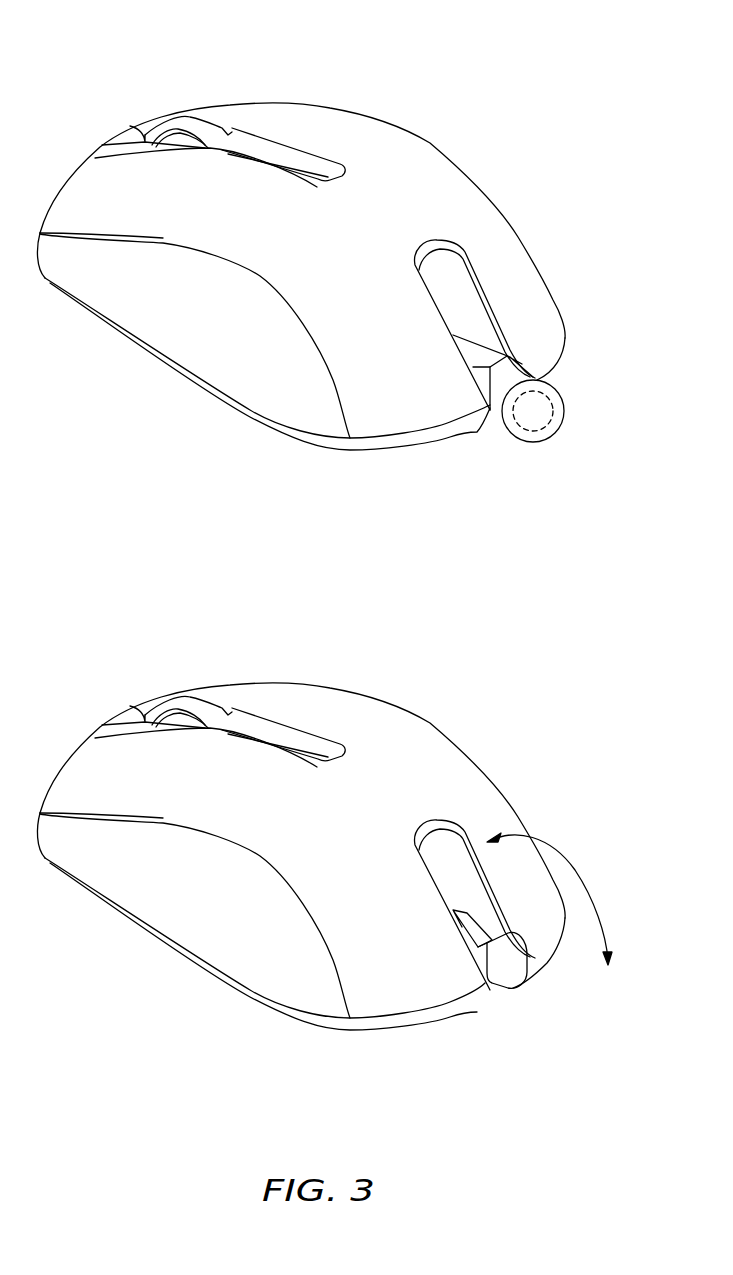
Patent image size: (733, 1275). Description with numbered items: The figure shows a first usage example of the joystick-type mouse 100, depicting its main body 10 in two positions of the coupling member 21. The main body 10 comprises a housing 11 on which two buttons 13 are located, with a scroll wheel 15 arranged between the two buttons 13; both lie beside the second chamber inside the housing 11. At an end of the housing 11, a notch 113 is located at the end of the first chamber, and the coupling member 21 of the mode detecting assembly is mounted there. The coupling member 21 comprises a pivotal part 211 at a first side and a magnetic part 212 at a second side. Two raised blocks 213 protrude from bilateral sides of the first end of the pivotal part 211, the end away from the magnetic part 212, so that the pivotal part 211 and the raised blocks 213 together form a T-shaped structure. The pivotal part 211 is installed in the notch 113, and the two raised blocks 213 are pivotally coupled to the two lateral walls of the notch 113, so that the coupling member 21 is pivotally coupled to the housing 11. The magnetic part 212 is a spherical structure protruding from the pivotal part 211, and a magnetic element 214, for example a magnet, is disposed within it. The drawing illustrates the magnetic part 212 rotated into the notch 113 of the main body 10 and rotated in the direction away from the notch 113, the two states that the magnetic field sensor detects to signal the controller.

The mouse 100 is at (62, 37).
The main body 10 is at (400, 110).
The housing 11 is at (463, 168).
The buttons 13 is at (280, 118).
The scroll wheel 15 is at (193, 125).
The notch 113 is at (455, 288).
The coupling member 21 is at (665, 330).
The pivotal part 211 is at (537, 375).
The magnetic part 212 is at (557, 415).
The raised blocks 213 is at (510, 363).
The magnetic element 214 is at (537, 418).